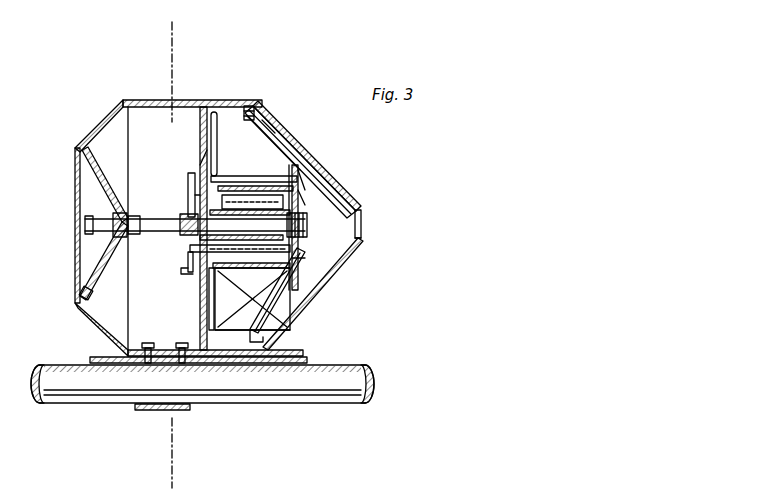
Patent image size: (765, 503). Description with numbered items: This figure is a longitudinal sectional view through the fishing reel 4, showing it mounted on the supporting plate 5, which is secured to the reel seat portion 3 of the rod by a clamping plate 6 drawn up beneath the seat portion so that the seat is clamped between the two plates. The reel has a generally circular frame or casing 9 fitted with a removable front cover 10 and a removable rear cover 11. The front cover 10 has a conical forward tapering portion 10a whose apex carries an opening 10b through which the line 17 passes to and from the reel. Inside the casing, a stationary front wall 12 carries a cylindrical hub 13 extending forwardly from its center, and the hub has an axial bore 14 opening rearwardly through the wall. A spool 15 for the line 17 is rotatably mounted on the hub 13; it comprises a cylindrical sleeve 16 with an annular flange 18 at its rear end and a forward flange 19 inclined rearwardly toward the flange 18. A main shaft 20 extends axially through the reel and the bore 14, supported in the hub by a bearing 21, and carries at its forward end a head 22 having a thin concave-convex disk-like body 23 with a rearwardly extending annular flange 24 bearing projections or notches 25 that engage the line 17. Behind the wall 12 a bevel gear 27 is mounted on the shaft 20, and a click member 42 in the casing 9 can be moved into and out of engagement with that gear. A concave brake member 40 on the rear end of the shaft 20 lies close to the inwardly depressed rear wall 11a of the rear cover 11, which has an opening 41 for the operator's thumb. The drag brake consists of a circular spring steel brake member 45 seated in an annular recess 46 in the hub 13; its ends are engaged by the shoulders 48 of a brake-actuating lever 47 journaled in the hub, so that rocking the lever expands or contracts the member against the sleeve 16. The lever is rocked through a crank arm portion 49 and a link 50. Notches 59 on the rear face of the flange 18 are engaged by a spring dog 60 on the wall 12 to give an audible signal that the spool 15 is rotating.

The reel seat portion 3 is at (66, 398).
The reel 4 is at (166, 38).
The supporting plate 5 is at (97, 357).
The clamping plate 6 is at (153, 411).
The frame or casing 9 is at (158, 98).
The front cover 10 is at (240, 100).
The conical forward tapering portion 10a is at (307, 158).
The opening 10b is at (361, 233).
The rear cover 11 is at (110, 116).
The rear wall 11a is at (80, 268).
The front wall 12 is at (200, 130).
The hub 13 is at (300, 166).
The axial bore 14 is at (298, 192).
The spool 15 is at (227, 335).
The cylindrical sleeve 16 is at (287, 149).
The line 17 is at (357, 213).
The annular flange 18 is at (214, 110).
The flange 19 is at (280, 112).
The main shaft 20 is at (308, 222).
The bearing 21 is at (300, 203).
The head 22 is at (308, 278).
The disk-like body 23 is at (313, 260).
The annular flange 24 is at (262, 340).
The projections or notches 25 is at (255, 105).
The bevel gear 27 is at (186, 233).
The brake member 40 is at (96, 287).
The opening 41 is at (100, 258).
The click member 42 is at (189, 178).
The brake member 45 is at (222, 183).
The annular recess 46 is at (195, 197).
The brake-actuating lever 47 is at (298, 250).
The shoulders 48 is at (240, 247).
The crank arm portion 49 is at (188, 258).
The link 50 is at (183, 273).
The notches 59 is at (268, 187).
The spring dog 60 is at (200, 162).